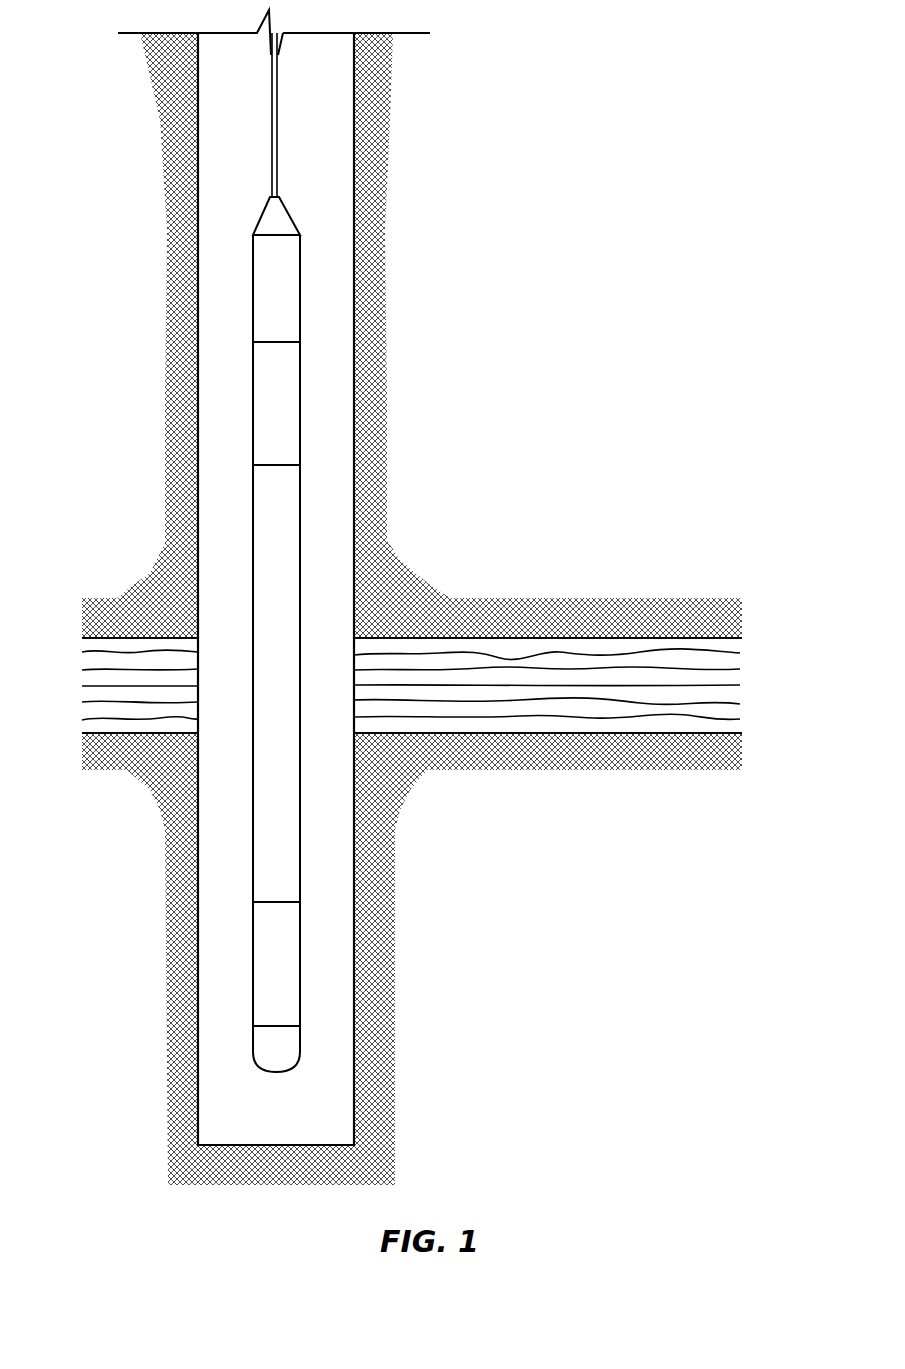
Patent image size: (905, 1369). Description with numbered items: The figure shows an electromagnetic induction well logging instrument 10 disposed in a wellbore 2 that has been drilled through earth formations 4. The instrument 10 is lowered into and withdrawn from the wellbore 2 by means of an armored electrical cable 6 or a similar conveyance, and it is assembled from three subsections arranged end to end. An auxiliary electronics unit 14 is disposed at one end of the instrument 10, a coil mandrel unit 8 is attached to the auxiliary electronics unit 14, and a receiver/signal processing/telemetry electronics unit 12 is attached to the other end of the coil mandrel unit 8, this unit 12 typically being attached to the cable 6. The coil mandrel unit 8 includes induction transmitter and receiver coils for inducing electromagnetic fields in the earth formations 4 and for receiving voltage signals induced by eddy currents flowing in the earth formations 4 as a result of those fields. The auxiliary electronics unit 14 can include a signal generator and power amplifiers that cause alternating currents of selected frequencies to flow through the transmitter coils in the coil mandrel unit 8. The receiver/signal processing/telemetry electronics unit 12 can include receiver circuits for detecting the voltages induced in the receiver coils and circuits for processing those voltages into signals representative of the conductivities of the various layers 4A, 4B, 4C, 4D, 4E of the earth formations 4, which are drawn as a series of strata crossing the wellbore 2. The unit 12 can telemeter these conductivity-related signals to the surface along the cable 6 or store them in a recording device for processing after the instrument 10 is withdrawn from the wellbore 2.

The wellbore 2 is at (325, 120).
The earth formations 4 is at (422, 695).
The layer of the earth formations 4A is at (730, 648).
The layer of the earth formations 4B is at (730, 670).
The layer of the earth formations 4C is at (730, 686).
The layer of the earth formations 4D is at (730, 707).
The layer of the earth formations 4E is at (730, 725).
The armored electrical cable 6 is at (254, 115).
The coil mandrel unit 8 is at (258, 683).
The electromagnetic induction well logging instrument 10 is at (324, 634).
The receiver/signal processing/telemetry electronics unit 12 is at (253, 403).
The auxiliary electronics unit 14 is at (253, 964).